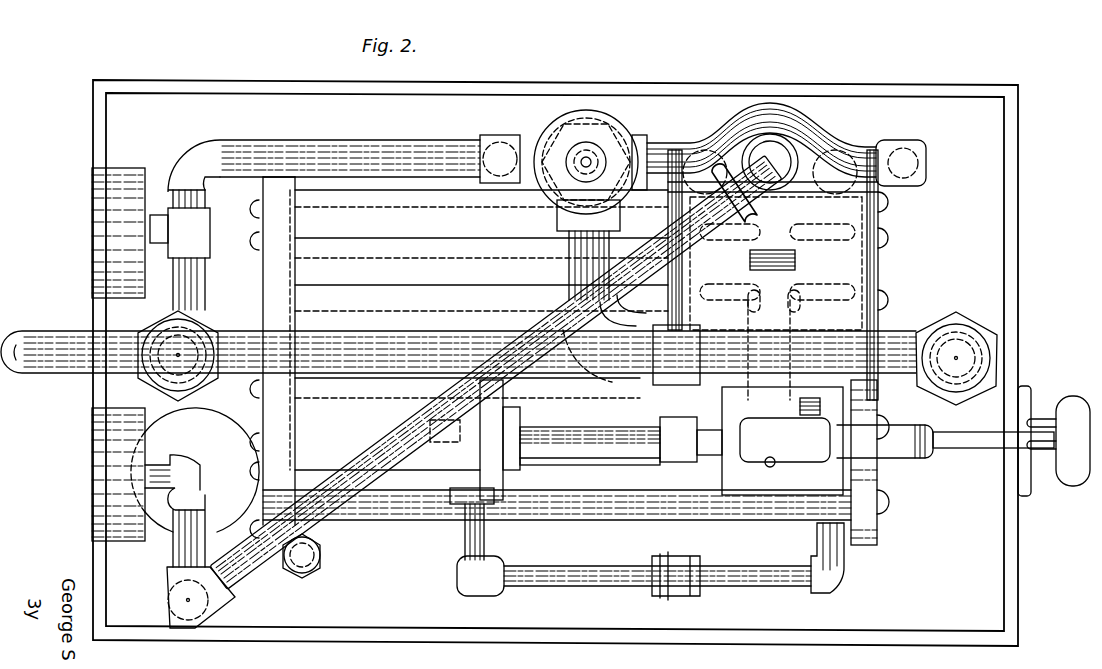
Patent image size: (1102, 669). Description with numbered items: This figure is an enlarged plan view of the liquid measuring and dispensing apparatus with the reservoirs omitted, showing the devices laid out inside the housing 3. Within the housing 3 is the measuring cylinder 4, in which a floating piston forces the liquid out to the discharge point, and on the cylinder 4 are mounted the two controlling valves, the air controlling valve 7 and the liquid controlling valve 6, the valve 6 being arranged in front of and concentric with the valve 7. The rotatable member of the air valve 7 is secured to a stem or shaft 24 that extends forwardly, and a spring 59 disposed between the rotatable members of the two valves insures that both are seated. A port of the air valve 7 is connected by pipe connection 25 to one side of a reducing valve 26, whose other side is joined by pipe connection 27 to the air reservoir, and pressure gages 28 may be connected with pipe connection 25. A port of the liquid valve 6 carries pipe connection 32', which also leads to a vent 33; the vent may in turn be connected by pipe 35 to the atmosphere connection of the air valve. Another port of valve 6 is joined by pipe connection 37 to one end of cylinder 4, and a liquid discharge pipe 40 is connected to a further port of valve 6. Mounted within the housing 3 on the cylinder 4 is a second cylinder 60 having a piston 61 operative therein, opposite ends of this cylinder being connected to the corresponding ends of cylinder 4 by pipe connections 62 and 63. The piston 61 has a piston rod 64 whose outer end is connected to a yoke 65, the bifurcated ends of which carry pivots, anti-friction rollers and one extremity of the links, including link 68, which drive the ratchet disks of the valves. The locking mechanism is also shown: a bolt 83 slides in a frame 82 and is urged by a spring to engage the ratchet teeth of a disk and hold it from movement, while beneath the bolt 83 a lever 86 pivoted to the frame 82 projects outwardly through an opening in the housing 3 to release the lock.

The housing 3 is at (1018, 283).
The measuring cylinder 4 is at (459, 357).
The valve 6 is at (885, 333).
The valve 7 is at (878, 206).
The stem or shaft 24 is at (790, 470).
The pipe connection 25 is at (530, 345).
The reducing valve 26 is at (195, 518).
The pipe connection 27 is at (362, 140).
The pressure gages 28 is at (92, 222).
The pipe connection 32' is at (583, 291).
The vent 33 is at (618, 130).
The pipe 35 is at (800, 122).
The pipe connection 37 is at (214, 330).
The liquid discharge pipe 40 is at (50, 336).
The spring 59 is at (795, 262).
The cylinder 60 is at (467, 439).
The piston 61 is at (437, 508).
The pipe connection 62 is at (320, 546).
The pipe connection 63 is at (582, 566).
The piston rod 64 is at (590, 449).
The yoke 65 is at (705, 460).
The link 68 is at (772, 440).
The frame 82 is at (925, 458).
The bolt 83 is at (895, 458).
The lever 86 is at (982, 450).